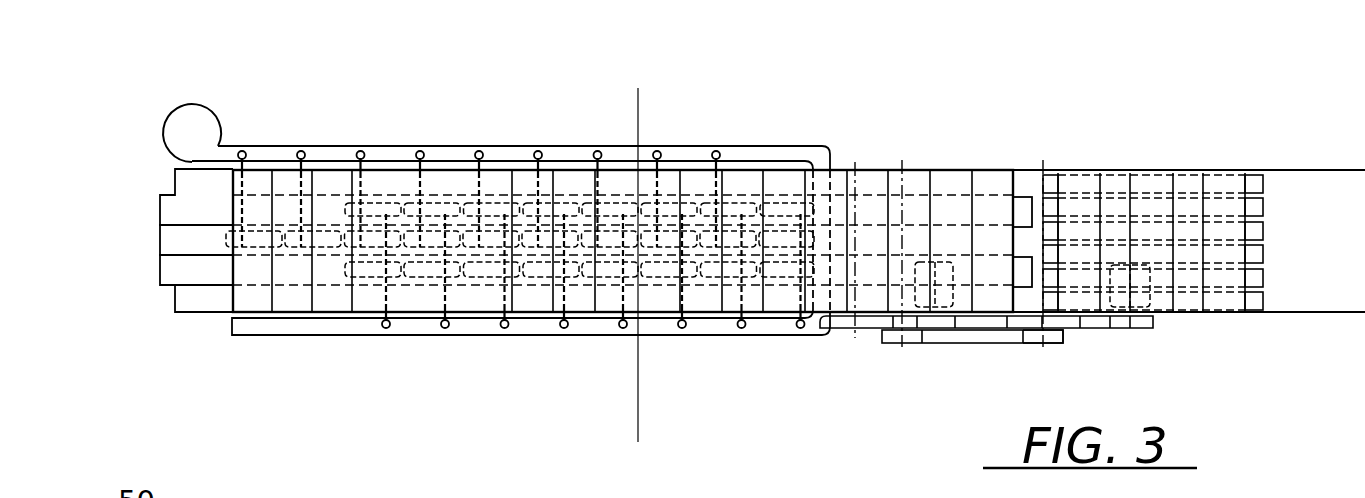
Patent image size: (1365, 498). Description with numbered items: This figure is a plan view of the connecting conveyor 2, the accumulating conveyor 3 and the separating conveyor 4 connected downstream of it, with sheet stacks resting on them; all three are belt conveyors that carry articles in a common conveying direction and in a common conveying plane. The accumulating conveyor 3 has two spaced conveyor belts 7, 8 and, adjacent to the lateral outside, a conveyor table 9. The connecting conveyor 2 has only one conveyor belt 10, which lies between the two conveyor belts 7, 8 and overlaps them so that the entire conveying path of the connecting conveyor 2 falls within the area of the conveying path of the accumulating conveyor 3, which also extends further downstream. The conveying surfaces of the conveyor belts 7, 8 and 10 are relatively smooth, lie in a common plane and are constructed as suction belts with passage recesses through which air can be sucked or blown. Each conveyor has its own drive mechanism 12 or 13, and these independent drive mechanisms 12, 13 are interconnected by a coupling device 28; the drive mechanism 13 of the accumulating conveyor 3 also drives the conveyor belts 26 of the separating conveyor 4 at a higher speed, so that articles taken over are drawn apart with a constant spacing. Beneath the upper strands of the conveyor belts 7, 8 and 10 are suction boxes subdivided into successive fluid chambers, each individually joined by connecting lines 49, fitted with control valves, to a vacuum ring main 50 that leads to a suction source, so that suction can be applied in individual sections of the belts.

The connecting conveyor 2 is at (397, 127).
The accumulating conveyor 3 is at (902, 147).
The separating conveyor 4 is at (1198, 156).
The conveyor belt 7 is at (170, 267).
The conveyor belt 8 is at (165, 205).
The conveyor table 9 is at (190, 300).
The conveyor belt 10 is at (168, 247).
The drive mechanism 12 is at (850, 348).
The drive mechanism 13 is at (1082, 344).
The conveyor belts 26 is at (1253, 232).
The coupling device 28 is at (978, 355).
The connecting lines 49 is at (393, 305).
The vacuum ring main 50 is at (197, 105).